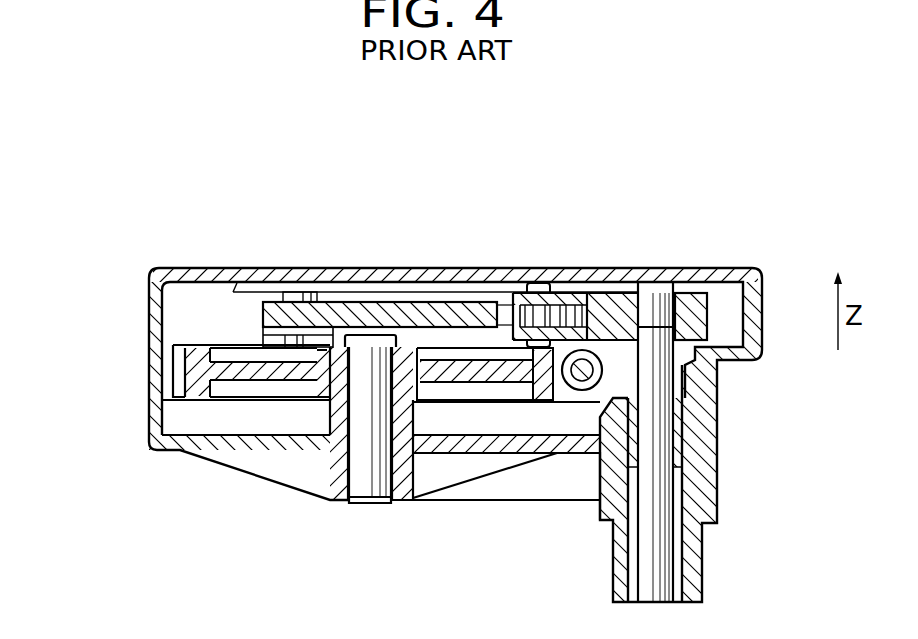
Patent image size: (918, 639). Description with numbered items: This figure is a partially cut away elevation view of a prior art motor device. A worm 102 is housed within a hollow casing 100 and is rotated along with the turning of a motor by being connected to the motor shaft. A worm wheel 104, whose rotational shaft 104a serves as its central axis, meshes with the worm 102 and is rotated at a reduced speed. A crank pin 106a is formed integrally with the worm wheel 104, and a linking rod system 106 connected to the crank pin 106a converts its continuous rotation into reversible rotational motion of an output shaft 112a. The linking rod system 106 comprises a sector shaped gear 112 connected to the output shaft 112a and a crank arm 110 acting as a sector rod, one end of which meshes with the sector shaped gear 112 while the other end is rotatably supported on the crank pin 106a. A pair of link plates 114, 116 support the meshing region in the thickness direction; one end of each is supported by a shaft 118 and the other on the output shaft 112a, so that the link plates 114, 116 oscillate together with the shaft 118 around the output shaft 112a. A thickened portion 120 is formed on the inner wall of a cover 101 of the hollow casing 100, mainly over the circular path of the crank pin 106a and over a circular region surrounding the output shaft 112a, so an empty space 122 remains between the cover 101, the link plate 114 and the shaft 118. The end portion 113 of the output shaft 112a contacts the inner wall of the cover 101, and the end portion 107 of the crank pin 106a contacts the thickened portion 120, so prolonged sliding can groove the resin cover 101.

The hollow casing 100 is at (148, 297).
The cover 101 is at (167, 270).
The worm 102 is at (582, 391).
The worm wheel 104 is at (253, 452).
The rotational shaft 104a is at (357, 503).
The linking rod system 106 is at (444, 318).
The crank pin 106a is at (287, 338).
The end portion of the crank pin 107 is at (246, 292).
The crank arm 110 is at (352, 310).
The sector shaped gear 112 is at (707, 315).
The output shaft 112a is at (663, 547).
The end portion of the output shaft 113 is at (677, 293).
The link plate 114 is at (597, 313).
The link plate 116 is at (637, 316).
The shaft 118 is at (539, 286).
The thickened portion 120 is at (312, 292).
The empty space 122 is at (512, 300).